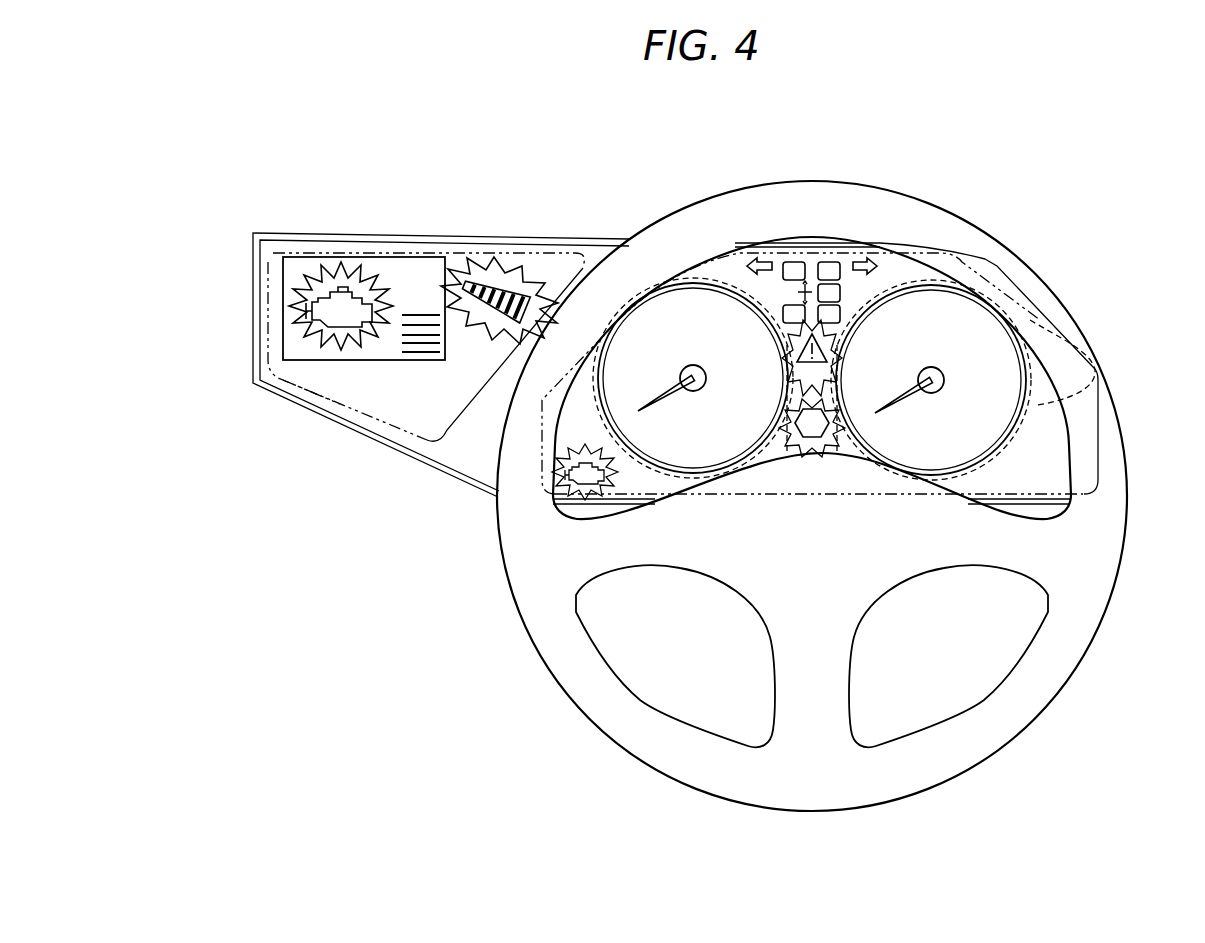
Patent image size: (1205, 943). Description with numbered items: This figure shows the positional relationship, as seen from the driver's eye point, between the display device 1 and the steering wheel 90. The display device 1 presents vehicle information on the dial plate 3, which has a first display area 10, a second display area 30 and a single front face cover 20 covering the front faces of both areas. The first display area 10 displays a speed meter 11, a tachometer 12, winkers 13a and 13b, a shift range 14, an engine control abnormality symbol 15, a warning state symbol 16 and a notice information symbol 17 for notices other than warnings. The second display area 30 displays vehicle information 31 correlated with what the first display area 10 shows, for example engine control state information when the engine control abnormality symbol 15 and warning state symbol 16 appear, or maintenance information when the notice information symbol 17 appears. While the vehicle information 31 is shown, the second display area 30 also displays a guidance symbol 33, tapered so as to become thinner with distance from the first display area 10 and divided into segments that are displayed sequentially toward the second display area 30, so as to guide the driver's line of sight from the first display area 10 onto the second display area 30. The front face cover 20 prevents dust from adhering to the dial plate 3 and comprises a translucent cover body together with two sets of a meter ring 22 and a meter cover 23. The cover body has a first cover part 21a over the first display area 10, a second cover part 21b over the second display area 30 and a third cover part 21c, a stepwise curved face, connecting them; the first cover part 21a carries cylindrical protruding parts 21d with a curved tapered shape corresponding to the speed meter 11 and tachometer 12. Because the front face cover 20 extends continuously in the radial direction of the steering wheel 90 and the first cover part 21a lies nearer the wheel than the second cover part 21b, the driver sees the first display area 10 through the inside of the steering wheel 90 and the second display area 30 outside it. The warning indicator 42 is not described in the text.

The display device 1 is at (1080, 241).
The dial plate 3 is at (523, 235).
The first display area 10 is at (918, 233).
The speed meter 11 is at (701, 276).
The tachometer 12 is at (955, 282).
The winker 13a is at (760, 257).
The winker 13b is at (861, 257).
The shift range 14 is at (812, 255).
The engine control abnormality symbol 15 is at (551, 493).
The warning state symbol 16 is at (784, 373).
The notice information symbol 17 is at (824, 460).
The front face cover 20 is at (566, 239).
The first cover part 21a is at (1053, 473).
The second cover part 21b is at (337, 383).
The third cover part 21c is at (460, 442).
The cylindrical protruding part 21d is at (1100, 367).
The meter ring 22 is at (678, 293).
The meter cover 23 is at (657, 313).
The second display area 30 is at (445, 256).
The vehicle information 31 is at (276, 298).
The guidance symbol 33 is at (486, 330).
The warning indicator 42 is at (796, 349).
The steering wheel 90 is at (1107, 400).